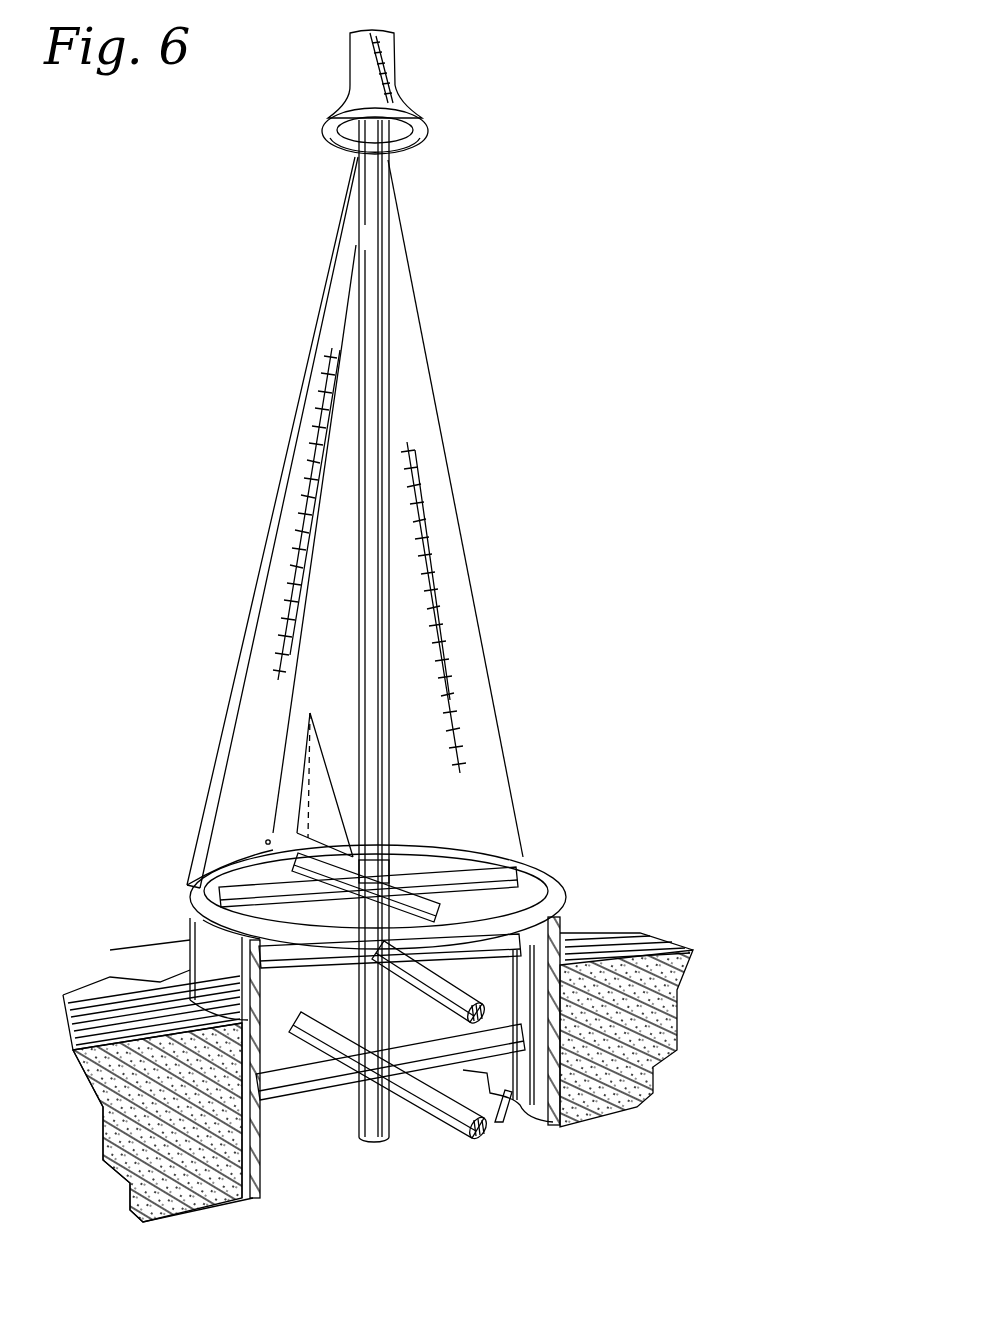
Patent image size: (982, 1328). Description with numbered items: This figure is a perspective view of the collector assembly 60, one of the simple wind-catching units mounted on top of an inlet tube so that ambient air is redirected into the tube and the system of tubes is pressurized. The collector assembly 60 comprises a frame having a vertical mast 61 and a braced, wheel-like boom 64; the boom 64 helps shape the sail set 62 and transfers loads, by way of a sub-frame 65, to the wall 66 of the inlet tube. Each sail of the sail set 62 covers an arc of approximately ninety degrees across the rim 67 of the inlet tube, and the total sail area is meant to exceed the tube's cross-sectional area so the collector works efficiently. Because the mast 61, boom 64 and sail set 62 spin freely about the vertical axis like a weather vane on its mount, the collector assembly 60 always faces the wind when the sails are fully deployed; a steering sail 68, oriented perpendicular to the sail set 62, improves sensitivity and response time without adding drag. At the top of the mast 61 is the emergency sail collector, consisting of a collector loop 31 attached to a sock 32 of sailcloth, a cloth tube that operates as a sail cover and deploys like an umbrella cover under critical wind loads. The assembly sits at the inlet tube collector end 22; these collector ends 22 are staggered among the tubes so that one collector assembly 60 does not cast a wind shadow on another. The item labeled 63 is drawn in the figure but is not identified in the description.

The inlet tube collector end 22 is at (110, 950).
The collector loop 31 is at (428, 130).
The sock 32 is at (396, 53).
The collector assembly 60 is at (140, 692).
The mast 61 is at (359, 456).
The sail set 62 is at (270, 523).
The sail foot 63 is at (227, 853).
The boom 64 is at (555, 882).
The sub-frame 65 is at (393, 1128).
The wall 66 is at (557, 1126).
The rim 67 is at (193, 913).
The steering sail 68 is at (310, 713).